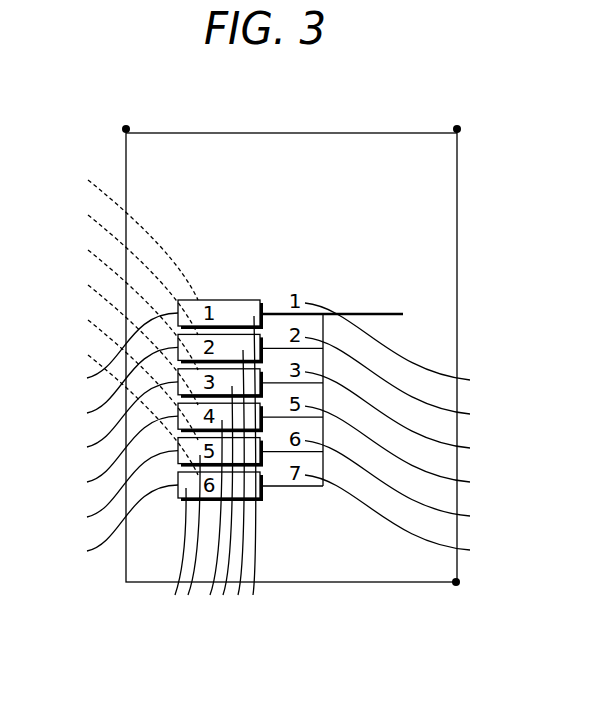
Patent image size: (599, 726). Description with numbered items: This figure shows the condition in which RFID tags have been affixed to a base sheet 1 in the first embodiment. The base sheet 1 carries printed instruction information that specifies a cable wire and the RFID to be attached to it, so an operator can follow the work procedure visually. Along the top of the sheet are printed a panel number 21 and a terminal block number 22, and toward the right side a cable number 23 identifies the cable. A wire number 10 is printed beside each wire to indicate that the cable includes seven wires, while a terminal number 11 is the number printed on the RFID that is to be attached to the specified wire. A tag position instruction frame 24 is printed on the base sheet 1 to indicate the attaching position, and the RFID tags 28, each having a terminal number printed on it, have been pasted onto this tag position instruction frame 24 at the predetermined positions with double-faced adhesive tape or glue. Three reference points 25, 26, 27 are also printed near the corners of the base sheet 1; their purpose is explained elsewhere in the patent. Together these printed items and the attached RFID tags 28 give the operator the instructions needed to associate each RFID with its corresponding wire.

The base sheet 1 is at (126, 154).
The wire number 10 is at (472, 357).
The terminal number 11 is at (82, 172).
The panel number 21 is at (198, 153).
The terminal block number 22 is at (300, 153).
The cable number 23 is at (400, 298).
The tag position instruction frame 24 is at (80, 368).
The reference point 25 is at (124, 129).
The reference point 26 is at (462, 128).
The reference point 27 is at (461, 582).
The RFID tag 28 is at (263, 597).